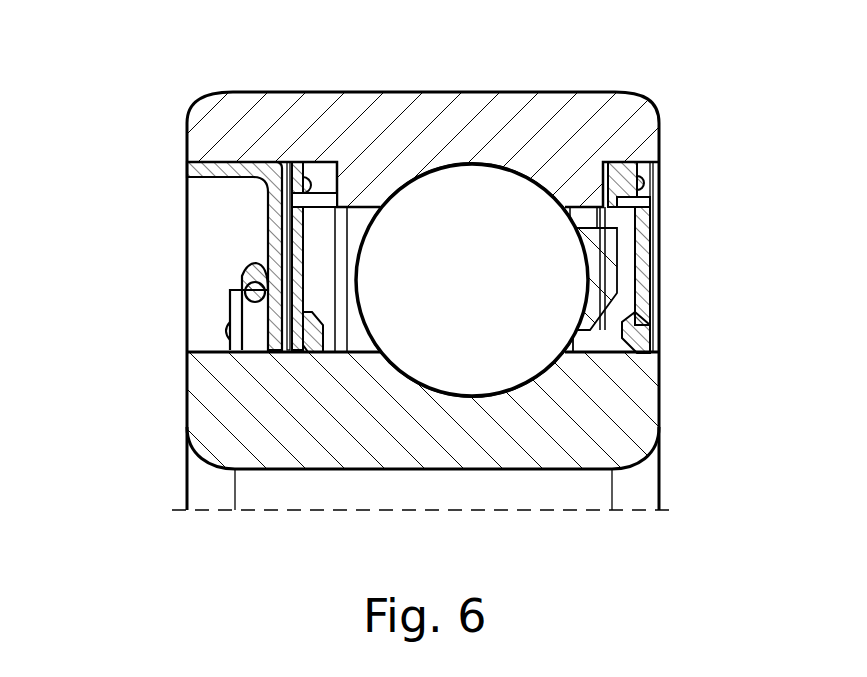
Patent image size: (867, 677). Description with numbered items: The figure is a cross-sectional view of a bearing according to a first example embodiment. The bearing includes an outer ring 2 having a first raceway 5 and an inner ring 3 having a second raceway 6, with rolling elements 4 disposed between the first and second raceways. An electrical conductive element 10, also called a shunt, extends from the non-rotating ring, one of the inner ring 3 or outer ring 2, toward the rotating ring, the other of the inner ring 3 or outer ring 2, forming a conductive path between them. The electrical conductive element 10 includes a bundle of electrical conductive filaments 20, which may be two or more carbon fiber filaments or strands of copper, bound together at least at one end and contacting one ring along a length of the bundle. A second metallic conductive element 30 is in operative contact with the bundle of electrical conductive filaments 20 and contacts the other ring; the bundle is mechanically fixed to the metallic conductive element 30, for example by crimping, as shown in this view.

The electrical conductive element 10 is at (157, 0).
The outer ring 2 is at (533, 117).
The inner ring 3 is at (527, 437).
The rolling elements 4 is at (542, 270).
The first raceway 5 is at (527, 177).
The second raceway 6 is at (540, 375).
The bundle of electrical conductive filaments 20 is at (230, 300).
The metallic conductive element 30 is at (250, 163).